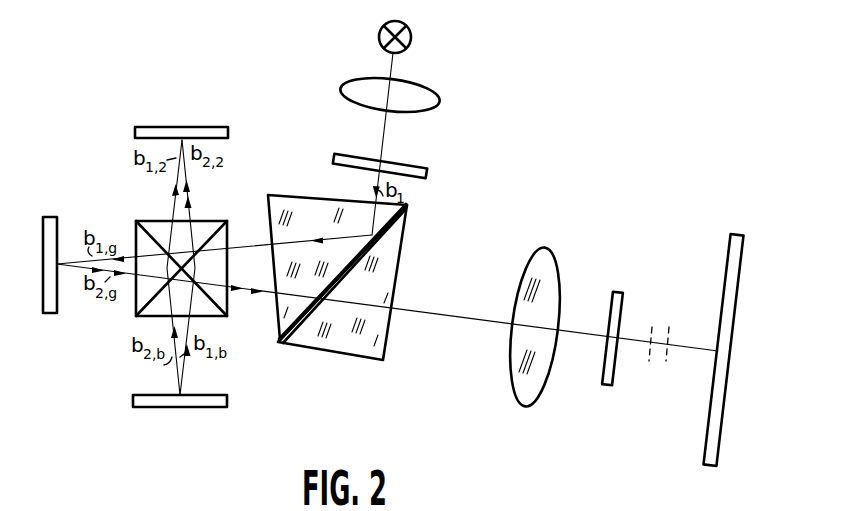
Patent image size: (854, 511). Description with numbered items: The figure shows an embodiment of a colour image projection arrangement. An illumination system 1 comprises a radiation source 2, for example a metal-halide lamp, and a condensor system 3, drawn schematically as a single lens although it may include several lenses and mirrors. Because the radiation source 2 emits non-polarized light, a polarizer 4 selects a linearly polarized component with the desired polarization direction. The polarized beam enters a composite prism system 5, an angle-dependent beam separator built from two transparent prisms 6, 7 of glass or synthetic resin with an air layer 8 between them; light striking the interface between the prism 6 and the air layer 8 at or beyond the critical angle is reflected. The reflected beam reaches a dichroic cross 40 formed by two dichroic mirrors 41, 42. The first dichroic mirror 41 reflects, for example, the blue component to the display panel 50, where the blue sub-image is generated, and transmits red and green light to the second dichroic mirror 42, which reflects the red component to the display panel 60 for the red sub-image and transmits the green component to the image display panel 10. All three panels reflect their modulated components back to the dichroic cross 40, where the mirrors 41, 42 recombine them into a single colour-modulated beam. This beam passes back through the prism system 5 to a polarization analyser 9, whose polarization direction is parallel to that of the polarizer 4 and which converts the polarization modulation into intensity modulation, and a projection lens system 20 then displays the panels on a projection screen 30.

The illumination system 1 is at (311, 90).
The radiation source 2 is at (411, 37).
The condensor system 3 is at (440, 98).
The polarizer 4 is at (428, 173).
The composite prism system 5 is at (455, 226).
The prism 6 is at (283, 195).
The prism 7 is at (328, 350).
The air layer 8 is at (279, 342).
The polarization analyser 9 is at (609, 386).
The image display panel 10 is at (36, 275).
The projection lens system 20 is at (524, 405).
The projection screen 30 is at (711, 468).
The dichroic cross 40 is at (243, 205).
The first dichroic mirror 41 is at (143, 302).
The second dichroic mirror 42 is at (156, 233).
The display panel 50 is at (227, 402).
The display panel 60 is at (228, 133).